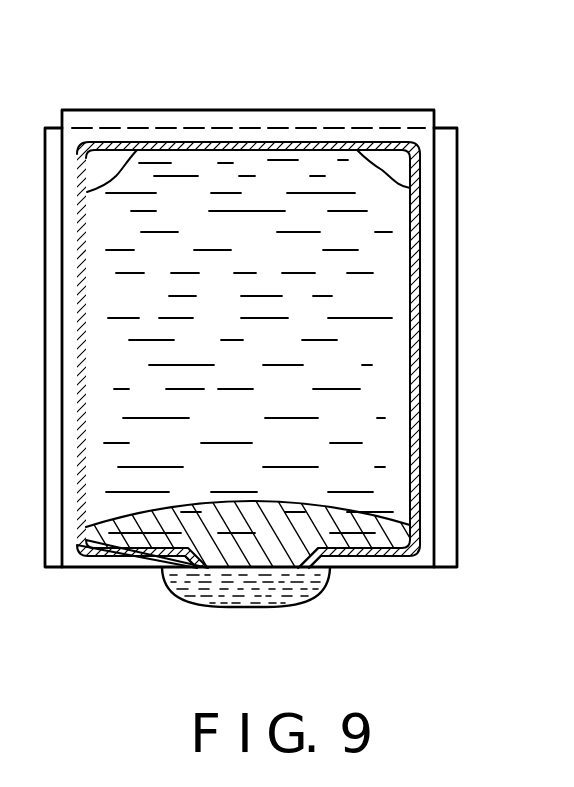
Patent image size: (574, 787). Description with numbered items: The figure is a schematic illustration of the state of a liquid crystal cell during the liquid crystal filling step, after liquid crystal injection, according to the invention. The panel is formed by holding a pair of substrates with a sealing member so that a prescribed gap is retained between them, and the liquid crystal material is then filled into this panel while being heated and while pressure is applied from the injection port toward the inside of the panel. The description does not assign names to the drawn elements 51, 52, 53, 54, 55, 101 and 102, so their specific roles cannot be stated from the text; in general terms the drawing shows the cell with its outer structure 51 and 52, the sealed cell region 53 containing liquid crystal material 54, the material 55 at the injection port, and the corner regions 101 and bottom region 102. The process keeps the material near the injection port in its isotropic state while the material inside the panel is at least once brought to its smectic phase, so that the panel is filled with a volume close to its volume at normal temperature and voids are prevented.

The outer casing 51 is at (318, 110).
The outer frame / holder 52 is at (458, 252).
The separator wall 53 is at (413, 336).
The anode material layer 54 is at (399, 474).
The cathode 55 is at (288, 593).
The corner seal portion 101 is at (108, 160).
The bottom portion of wall 102 is at (140, 545).